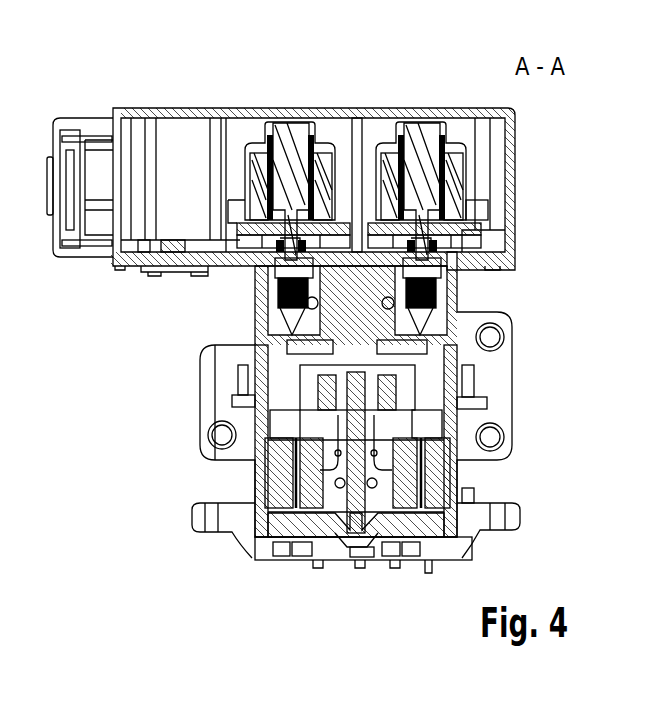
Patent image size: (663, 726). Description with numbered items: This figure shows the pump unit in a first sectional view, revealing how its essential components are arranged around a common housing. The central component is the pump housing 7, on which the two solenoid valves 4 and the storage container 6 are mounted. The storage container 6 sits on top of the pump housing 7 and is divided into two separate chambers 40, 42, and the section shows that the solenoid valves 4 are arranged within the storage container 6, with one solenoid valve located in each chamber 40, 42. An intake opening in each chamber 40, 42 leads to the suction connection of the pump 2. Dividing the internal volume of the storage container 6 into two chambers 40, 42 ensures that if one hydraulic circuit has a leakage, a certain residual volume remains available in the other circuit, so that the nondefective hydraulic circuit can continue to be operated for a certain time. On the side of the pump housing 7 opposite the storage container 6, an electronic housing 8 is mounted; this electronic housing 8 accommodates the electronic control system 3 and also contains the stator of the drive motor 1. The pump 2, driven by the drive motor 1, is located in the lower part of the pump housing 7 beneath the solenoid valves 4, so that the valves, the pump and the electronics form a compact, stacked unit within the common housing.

The drive motor 1 is at (377, 545).
The pump 2 is at (400, 395).
The electronic control system 3 is at (300, 562).
The solenoid valve 4 is at (298, 130).
The storage container 6 is at (512, 165).
The pump housing 7 is at (257, 303).
The electronic housing 8 is at (455, 470).
The chamber 40 is at (385, 130).
The chamber 42 is at (244, 130).